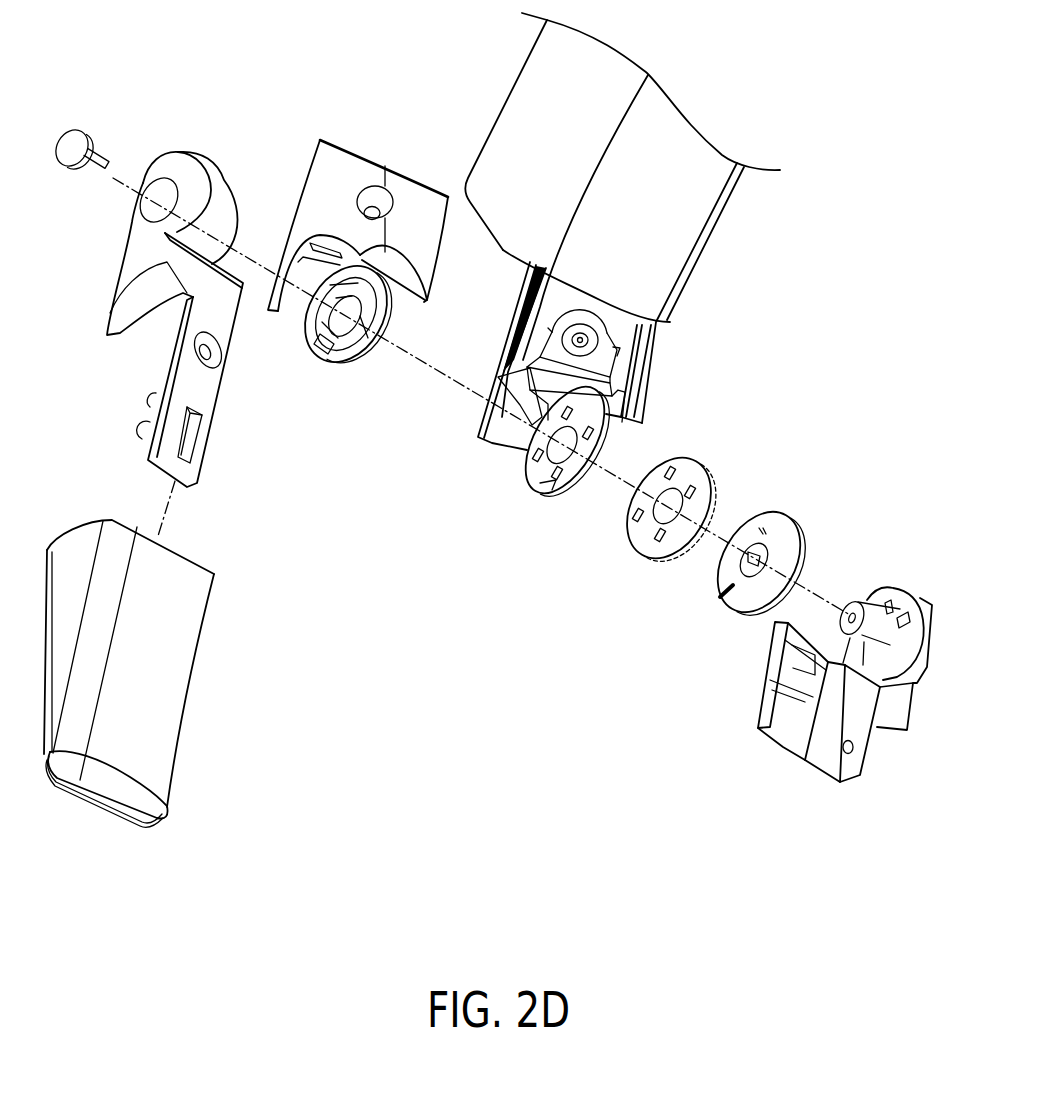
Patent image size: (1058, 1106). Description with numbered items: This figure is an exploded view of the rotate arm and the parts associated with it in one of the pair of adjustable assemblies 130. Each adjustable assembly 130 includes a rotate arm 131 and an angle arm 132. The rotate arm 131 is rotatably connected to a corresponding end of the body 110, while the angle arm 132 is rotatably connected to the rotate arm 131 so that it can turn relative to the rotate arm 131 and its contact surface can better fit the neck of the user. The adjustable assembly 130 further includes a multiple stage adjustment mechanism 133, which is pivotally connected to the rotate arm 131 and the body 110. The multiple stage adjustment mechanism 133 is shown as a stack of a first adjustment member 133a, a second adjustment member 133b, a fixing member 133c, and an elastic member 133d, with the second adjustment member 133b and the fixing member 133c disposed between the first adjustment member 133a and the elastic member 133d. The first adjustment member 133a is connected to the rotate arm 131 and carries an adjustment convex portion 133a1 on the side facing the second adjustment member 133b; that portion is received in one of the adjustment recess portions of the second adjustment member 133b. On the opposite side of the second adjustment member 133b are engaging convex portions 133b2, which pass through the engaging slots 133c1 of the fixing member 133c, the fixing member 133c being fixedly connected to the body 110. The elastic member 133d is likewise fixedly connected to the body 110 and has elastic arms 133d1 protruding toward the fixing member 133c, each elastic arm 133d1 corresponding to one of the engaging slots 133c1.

The body 110 is at (513, 113).
The adjustable assembly 130 is at (787, 424).
The rotate arm 131 is at (223, 188).
The angle arm 132 is at (178, 657).
The multiple stage adjustment mechanism 133 is at (572, 622).
The first adjustment member 133a is at (773, 527).
The adjustment convex portion 133a1 is at (718, 595).
The second adjustment member 133b is at (637, 532).
The engaging convex portion 133b2 is at (647, 558).
The fixing member 133c is at (538, 468).
The engaging slot 133c1 is at (550, 493).
The elastic member 133d is at (305, 330).
The elastic arm 133d1 is at (330, 347).